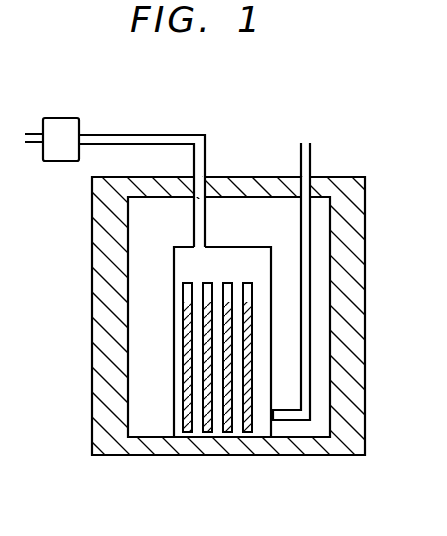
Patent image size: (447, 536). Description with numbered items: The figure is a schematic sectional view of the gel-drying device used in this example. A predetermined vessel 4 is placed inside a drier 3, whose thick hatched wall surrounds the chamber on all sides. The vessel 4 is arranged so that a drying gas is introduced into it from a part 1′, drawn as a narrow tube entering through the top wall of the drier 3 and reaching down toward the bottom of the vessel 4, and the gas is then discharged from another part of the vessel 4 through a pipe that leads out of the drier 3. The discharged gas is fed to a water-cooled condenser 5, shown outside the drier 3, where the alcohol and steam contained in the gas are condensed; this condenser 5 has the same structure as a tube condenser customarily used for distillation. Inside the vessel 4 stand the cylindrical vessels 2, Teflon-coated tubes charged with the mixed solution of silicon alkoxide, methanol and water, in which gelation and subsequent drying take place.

The gas introduction part 1′ is at (307, 143).
The cylindrical vessels 2 is at (182, 290).
The drier 3 is at (347, 328).
The vessel 4 is at (256, 248).
The water-cooled condenser 5 is at (72, 118).